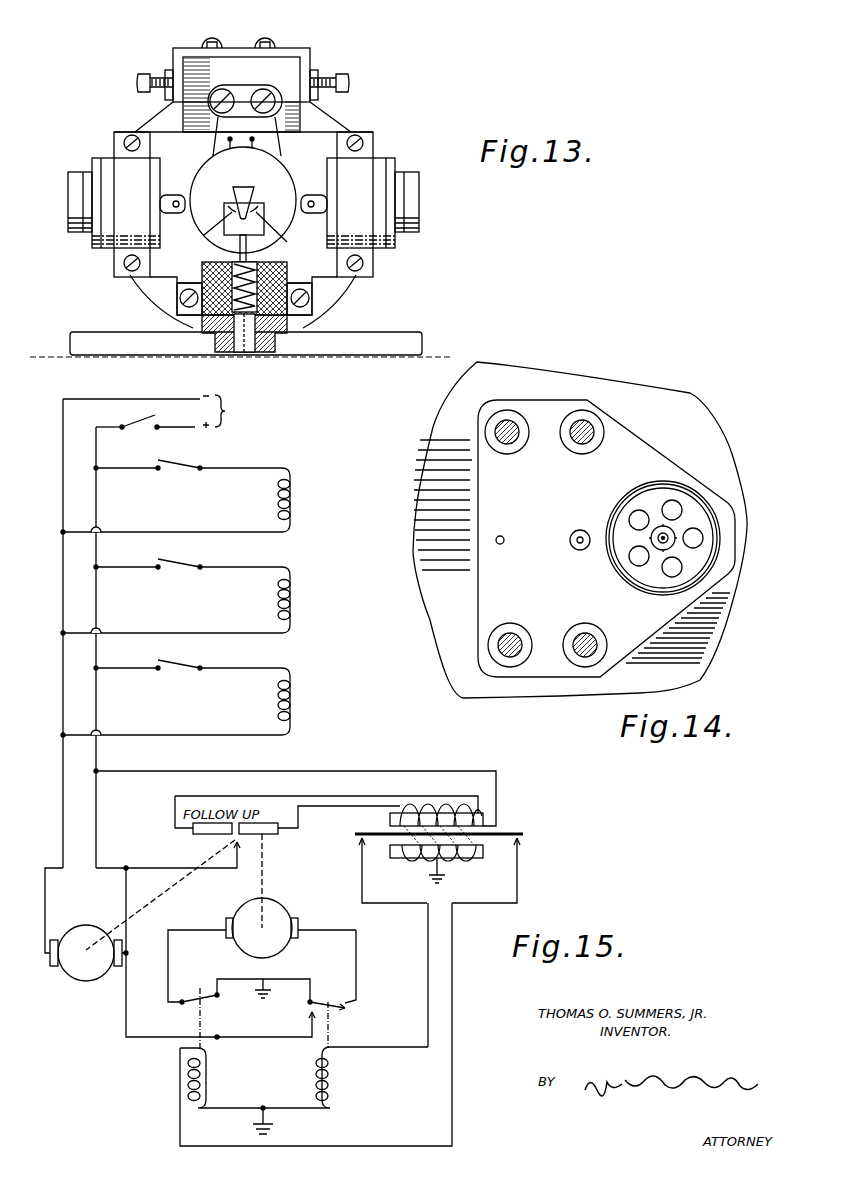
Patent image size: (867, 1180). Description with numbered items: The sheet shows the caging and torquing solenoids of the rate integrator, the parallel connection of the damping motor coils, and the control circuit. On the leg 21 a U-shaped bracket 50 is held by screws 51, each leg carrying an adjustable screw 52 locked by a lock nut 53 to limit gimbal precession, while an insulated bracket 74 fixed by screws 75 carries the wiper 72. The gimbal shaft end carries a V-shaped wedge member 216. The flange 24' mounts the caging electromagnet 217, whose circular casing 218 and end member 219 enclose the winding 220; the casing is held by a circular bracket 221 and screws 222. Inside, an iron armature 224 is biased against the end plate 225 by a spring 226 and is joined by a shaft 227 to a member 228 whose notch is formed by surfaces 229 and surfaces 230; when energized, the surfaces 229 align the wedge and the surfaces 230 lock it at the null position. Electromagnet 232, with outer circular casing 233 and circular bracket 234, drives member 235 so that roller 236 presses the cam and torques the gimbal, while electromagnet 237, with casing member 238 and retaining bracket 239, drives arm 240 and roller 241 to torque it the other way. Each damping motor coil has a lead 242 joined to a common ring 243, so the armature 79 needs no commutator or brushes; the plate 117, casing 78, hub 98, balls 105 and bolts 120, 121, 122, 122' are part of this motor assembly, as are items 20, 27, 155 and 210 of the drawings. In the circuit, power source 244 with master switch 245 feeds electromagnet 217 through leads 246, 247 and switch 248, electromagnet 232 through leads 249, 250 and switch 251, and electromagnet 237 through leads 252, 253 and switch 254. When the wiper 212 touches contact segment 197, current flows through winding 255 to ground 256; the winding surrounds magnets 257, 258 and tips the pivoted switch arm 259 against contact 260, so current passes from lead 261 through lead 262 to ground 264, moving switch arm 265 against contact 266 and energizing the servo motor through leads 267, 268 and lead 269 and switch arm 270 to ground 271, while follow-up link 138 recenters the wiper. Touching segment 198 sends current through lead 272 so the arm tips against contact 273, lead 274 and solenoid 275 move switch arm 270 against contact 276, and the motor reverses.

In FIG. 13, the base plate 20 is at (393, 333).
In FIG. 13, the leg 21 is at (191, 65).
In FIG. 13, the flange 24' is at (257, 301).
In FIG. 15, the gyro 27 is at (94, 921).
In FIG. 13, the U-shaped bracket 50 is at (293, 50).
In FIG. 13, the screws 51 is at (220, 40).
In FIG. 13, the adjustable screw 52 is at (142, 78).
In FIG. 13, the lock nut 53 is at (320, 78).
In FIG. 13, the wiper 72 is at (262, 124).
In FIG. 13, the insulated bracket 74 is at (229, 91).
In FIG. 13, the screws 75 is at (266, 91).
In FIG. 14, the casing 78 is at (455, 673).
In FIG. 14, the armature 79 is at (698, 501).
In FIG. 14, the rotor 98 is at (696, 514).
In FIG. 14, the ball 105 is at (702, 544).
In FIG. 14, the plate 117 is at (638, 651).
In FIG. 14, the bolt 120 is at (507, 444).
In FIG. 14, the bolt 121 is at (514, 638).
In FIG. 14, the bolt 122 is at (601, 637).
In FIG. 14, the bolt 122' is at (582, 446).
In FIG. 15, the follow-up link 138 is at (264, 869).
In FIG. 15, the servo motor 155 is at (275, 956).
In FIG. 15, the contact segment 197 is at (280, 837).
In FIG. 15, the contact segment 198 is at (192, 835).
In FIG. 15, the link 210 is at (148, 894).
In FIG. 15, the wiper 212 is at (232, 844).
In FIG. 13, the V-shaped wedge member 216 is at (245, 186).
In FIG. 13, the electromagnet 217 is at (194, 328).
In FIG. 15, the electromagnet 217 is at (305, 503).
In FIG. 13, the circular casing 218 is at (289, 266).
In FIG. 13, the end member 219 is at (280, 336).
In FIG. 13, the winding 220 is at (218, 303).
In FIG. 13, the circular bracket 221 is at (292, 285).
In FIG. 13, the screws 222 is at (315, 307).
In FIG. 13, the iron armature 224 is at (236, 337).
In FIG. 13, the end plate 225 is at (238, 353).
In FIG. 13, the spring 226 is at (238, 258).
In FIG. 13, the shaft 227 is at (300, 319).
In FIG. 13, the member 228 is at (260, 209).
In FIG. 13, the surfaces 229 is at (232, 203).
In FIG. 13, the surfaces 230 is at (202, 235).
In FIG. 13, the electromagnet 232 is at (396, 251).
In FIG. 15, the electromagnet 232 is at (305, 604).
In FIG. 13, the outer circular casing 233 is at (398, 180).
In FIG. 13, the circular bracket 234 is at (357, 166).
In FIG. 13, the member 235 is at (314, 195).
In FIG. 13, the roller 236 is at (298, 215).
In FIG. 13, the electromagnet 237 is at (86, 253).
In FIG. 15, the electromagnet 237 is at (305, 705).
In FIG. 13, the circular casing member 238 is at (100, 250).
In FIG. 13, the circular retaining bracket 239 is at (126, 166).
In FIG. 13, the arm 240 is at (168, 195).
In FIG. 13, the roller 241 is at (190, 200).
In FIG. 14, the lead 242 is at (657, 523).
In FIG. 14, the common ring 243 is at (680, 557).
In FIG. 15, the power source 244 is at (159, 411).
In FIG. 15, the master switch 245 is at (135, 418).
In FIG. 15, the lead 246 is at (186, 532).
In FIG. 15, the lead 247 is at (242, 468).
In FIG. 15, the switch 248 is at (176, 467).
In FIG. 15, the lead 249 is at (240, 567).
In FIG. 15, the lead 250 is at (200, 633).
In FIG. 13, the switch 251 is at (280, 163).
In FIG. 15, the switch 251 is at (186, 564).
In FIG. 15, the lead 252 is at (248, 668).
In FIG. 15, the lead 253 is at (207, 735).
In FIG. 15, the switch 254 is at (188, 665).
In FIG. 15, the winding 255 is at (408, 862).
In FIG. 15, the ground 256 is at (438, 885).
In FIG. 15, the magnet 257 is at (483, 815).
In FIG. 15, the magnet 258 is at (488, 851).
In FIG. 15, the pivoted switch arm 259 is at (508, 832).
In FIG. 15, the contact 260 is at (360, 849).
In FIG. 15, the lead 261 is at (465, 771).
In FIG. 15, the lead 262 is at (427, 976).
In FIG. 15, the ground 264 is at (278, 1131).
In FIG. 15, the switch arm 265 is at (325, 996).
In FIG. 15, the contact 266 is at (312, 1017).
In FIG. 15, the lead 267 is at (138, 1037).
In FIG. 15, the lead 268 is at (358, 949).
In FIG. 15, the lead 269 is at (170, 953).
In FIG. 15, the switch arm 270 is at (195, 996).
In FIG. 15, the ground 271 is at (258, 997).
In FIG. 15, the lead 272 is at (365, 796).
In FIG. 15, the contact 273 is at (520, 850).
In FIG. 15, the lead 274 is at (454, 1037).
In FIG. 15, the solenoid 275 is at (208, 1085).
In FIG. 15, the contact 276 is at (217, 1031).